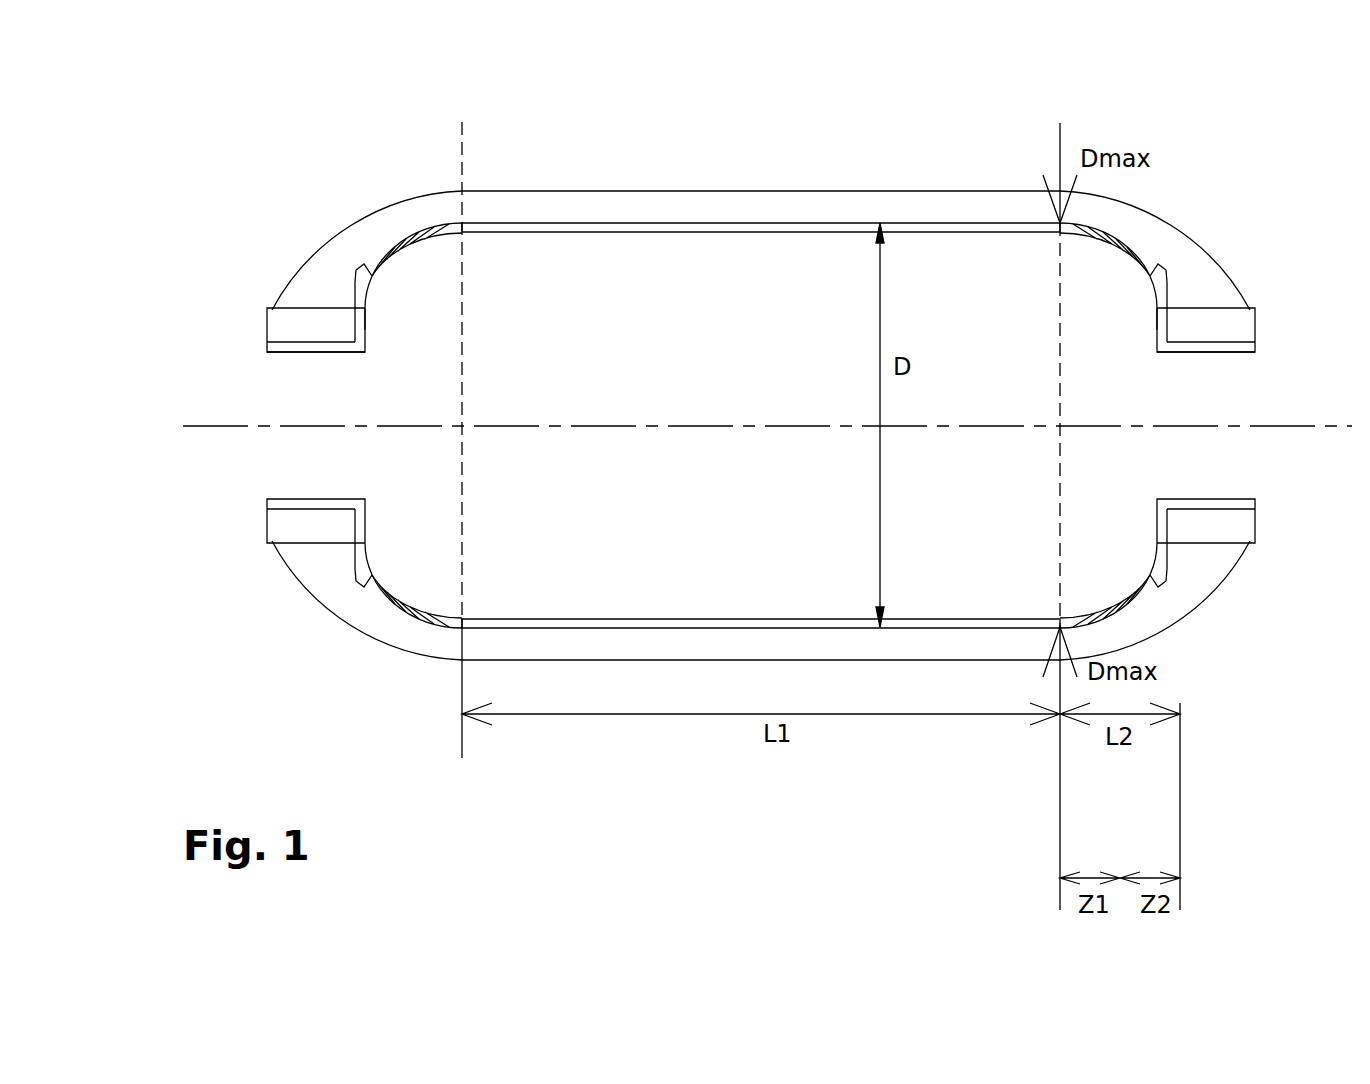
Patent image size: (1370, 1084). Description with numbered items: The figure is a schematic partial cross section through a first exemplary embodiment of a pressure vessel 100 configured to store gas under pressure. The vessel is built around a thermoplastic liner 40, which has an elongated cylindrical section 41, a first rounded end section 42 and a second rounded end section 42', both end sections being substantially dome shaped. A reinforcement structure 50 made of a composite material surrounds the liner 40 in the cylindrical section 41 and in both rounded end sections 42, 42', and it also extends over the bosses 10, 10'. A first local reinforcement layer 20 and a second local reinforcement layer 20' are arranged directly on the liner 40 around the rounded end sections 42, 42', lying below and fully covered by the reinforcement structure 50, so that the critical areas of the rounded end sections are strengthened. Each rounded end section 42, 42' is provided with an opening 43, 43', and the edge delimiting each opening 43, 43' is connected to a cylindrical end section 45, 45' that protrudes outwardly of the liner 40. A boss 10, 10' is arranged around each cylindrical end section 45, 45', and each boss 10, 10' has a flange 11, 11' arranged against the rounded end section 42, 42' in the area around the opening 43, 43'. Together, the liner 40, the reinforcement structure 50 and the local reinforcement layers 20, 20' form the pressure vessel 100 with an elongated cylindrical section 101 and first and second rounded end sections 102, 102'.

The pressure vessel 100 is at (1123, 125).
The elongated cylindrical section 101 is at (637, 673).
The first rounded end section 102 is at (1215, 600).
The second rounded end section 102' is at (300, 600).
The boss 10 is at (1200, 425).
The boss 10' is at (319, 425).
The flange 11 is at (822, 402).
The flange 11' is at (298, 228).
The first local reinforcement layer 20 is at (1137, 385).
The second local reinforcement layer 20' is at (407, 491).
The thermoplastic liner 40 is at (820, 233).
The elongated cylindrical section 41 is at (685, 223).
The first rounded end section 42 is at (1125, 347).
The second rounded end section 42' is at (386, 357).
The opening 43 is at (1243, 373).
The opening 43' is at (264, 387).
The cylindrical end section 45 is at (1257, 413).
The cylindrical end section 45' is at (259, 393).
The reinforcement structure 50 is at (997, 208).